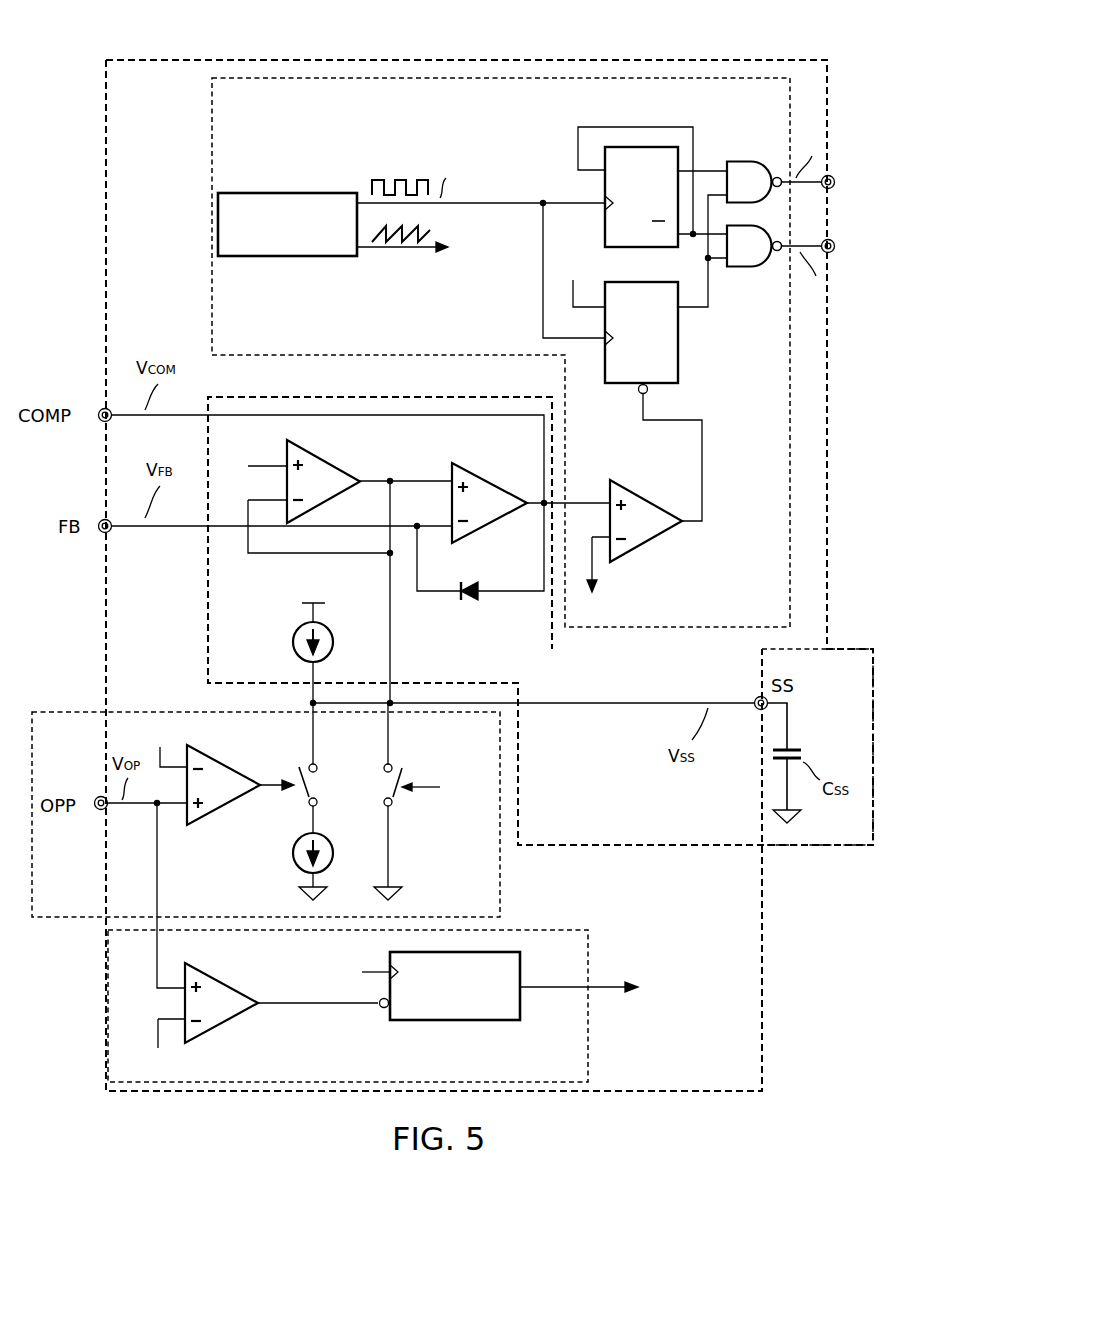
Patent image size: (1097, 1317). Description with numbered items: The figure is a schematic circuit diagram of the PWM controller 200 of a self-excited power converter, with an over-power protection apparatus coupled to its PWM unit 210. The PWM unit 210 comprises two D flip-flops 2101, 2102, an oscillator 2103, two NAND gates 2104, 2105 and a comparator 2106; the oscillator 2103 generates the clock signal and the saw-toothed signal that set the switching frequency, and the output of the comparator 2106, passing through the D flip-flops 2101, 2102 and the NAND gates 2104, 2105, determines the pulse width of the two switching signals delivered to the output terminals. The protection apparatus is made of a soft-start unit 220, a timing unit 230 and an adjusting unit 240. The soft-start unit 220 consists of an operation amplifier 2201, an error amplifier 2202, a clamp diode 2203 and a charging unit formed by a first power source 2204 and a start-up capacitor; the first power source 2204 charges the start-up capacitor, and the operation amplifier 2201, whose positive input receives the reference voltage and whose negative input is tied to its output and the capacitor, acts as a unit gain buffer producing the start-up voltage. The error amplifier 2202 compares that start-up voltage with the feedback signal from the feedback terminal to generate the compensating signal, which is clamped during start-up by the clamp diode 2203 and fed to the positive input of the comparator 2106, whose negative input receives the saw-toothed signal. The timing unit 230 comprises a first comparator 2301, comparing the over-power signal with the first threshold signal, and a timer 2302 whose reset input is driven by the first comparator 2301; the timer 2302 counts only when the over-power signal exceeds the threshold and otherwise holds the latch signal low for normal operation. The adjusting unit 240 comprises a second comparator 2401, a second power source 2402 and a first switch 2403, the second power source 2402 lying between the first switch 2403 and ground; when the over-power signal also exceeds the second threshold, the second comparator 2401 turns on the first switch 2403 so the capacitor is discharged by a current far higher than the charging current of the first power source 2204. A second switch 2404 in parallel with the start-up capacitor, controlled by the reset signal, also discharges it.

The PWM controller 200 is at (722, 58).
The PWM unit 210 is at (212, 130).
The soft-start unit 220 is at (873, 648).
The timing unit 230 is at (588, 1040).
The adjusting unit 240 is at (503, 875).
The D flip-flop 2101 is at (645, 142).
The D flip-flop 2102 is at (680, 372).
The oscillator 2103 is at (287, 192).
The NAND gate 2104 is at (740, 160).
The NAND gate 2105 is at (748, 272).
The comparator 2106 is at (668, 544).
The operation amplifier 2201 is at (337, 458).
The error amplifier 2202 is at (492, 526).
The clamp diode 2203 is at (468, 606).
The first power source 2204 is at (292, 644).
The first comparator 2301 is at (264, 1046).
The timer 2302 is at (498, 1026).
The second comparator 2401 is at (218, 762).
The second power source 2402 is at (292, 860).
The first switch 2403 is at (300, 800).
The second switch 2404 is at (400, 806).